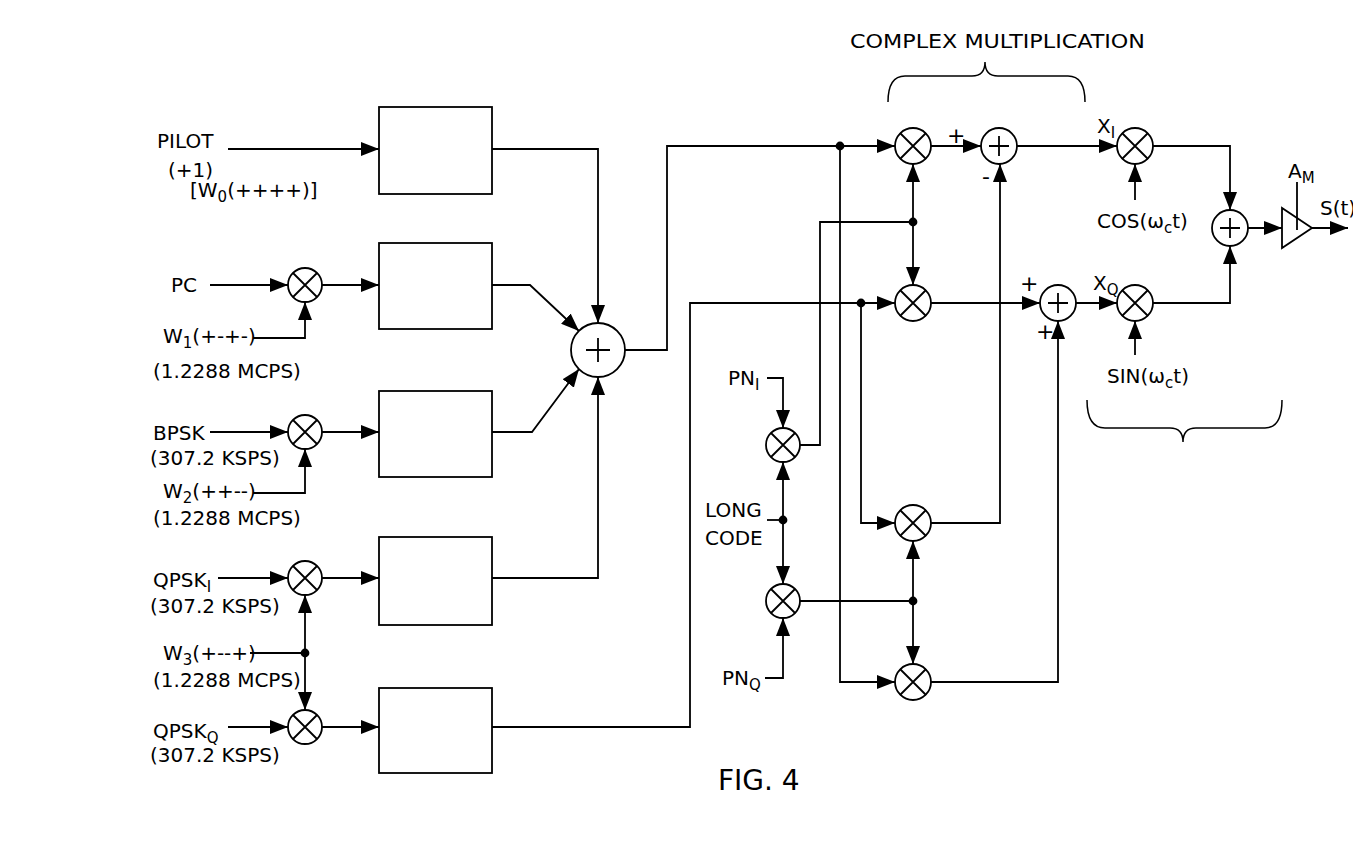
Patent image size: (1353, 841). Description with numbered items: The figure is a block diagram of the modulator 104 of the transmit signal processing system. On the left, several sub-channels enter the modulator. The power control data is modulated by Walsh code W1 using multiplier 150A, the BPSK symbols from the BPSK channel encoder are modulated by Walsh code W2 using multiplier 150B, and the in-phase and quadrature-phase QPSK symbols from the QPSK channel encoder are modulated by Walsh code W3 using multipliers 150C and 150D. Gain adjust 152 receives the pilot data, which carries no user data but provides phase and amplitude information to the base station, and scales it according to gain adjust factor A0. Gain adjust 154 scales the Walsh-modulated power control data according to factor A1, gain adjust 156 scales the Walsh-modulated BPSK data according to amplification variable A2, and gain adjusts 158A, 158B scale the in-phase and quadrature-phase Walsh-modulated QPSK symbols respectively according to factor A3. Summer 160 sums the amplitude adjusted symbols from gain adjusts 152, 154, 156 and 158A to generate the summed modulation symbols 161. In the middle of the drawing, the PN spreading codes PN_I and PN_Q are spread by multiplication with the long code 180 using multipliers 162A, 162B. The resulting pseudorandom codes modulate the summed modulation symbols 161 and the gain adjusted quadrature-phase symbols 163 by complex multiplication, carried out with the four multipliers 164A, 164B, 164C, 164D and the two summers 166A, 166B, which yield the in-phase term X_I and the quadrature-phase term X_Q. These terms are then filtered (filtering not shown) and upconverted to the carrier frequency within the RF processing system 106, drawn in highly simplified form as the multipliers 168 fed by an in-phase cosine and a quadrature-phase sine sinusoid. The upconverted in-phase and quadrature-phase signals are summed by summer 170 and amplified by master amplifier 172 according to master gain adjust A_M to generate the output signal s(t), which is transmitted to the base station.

The modulator 104 is at (1092, 758).
The RF processing system 106 is at (1184, 464).
The multiplier 150A is at (313, 270).
The multiplier 150B is at (313, 417).
The multiplier 150C is at (313, 563).
The multiplier 150D is at (317, 712).
The gain adjust 152 is at (444, 107).
The gain adjust 154 is at (444, 243).
The gain adjust 156 is at (444, 391).
The gain adjust 158A is at (444, 537).
The gain adjust 158B is at (444, 688).
The summer 160 is at (613, 328).
The summed modulation symbols 161 is at (686, 146).
The gain adjusted quadrature-phase symbols 163 is at (708, 303).
The multiplier 162A is at (766, 441).
The multiplier 162B is at (766, 601).
The multiplier 164A is at (907, 130).
The multiplier 164B is at (925, 290).
The multiplier 164C is at (917, 508).
The multiplier 164D is at (925, 668).
The summer 166A is at (1000, 128).
The summer 166B is at (1057, 285).
The multipliers 168 is at (1142, 130).
The summer 170 is at (1240, 213).
The master amplifier 172 is at (1297, 242).
The long code 180 is at (786, 508).